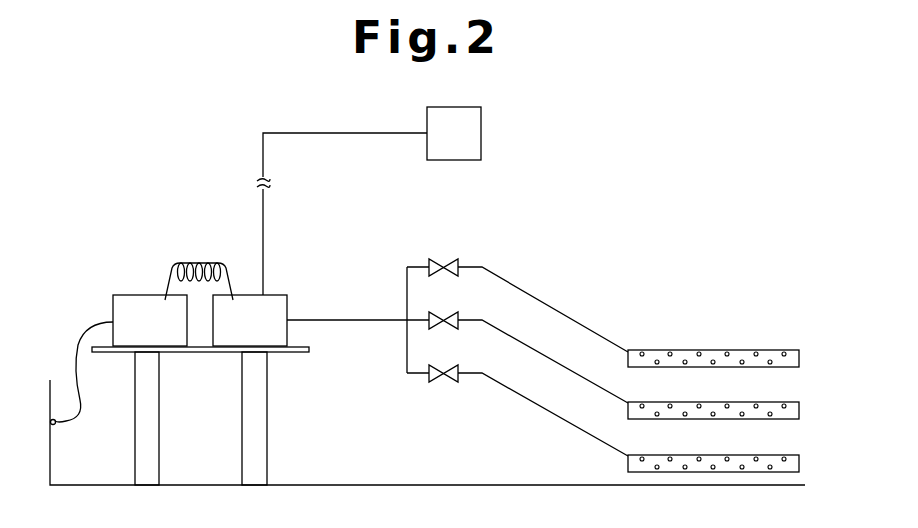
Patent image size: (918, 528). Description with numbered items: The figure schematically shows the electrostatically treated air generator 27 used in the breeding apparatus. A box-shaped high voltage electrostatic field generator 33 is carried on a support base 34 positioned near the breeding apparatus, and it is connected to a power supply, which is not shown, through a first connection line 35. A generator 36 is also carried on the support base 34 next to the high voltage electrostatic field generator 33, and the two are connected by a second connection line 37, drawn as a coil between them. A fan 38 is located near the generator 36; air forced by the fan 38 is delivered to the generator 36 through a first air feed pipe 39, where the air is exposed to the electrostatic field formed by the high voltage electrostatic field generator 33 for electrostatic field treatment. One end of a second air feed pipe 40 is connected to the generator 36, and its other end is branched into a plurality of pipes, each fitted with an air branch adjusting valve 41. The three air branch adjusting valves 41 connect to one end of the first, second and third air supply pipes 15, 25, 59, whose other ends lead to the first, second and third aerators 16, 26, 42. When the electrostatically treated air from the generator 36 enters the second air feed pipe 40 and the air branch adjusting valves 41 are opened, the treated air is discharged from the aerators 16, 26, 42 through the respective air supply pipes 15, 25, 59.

The electrostatically treated air generator 27 is at (571, 121).
The high voltage electrostatic field generator 33 is at (127, 295).
The support base 34 is at (267, 397).
The first connection line 35 is at (95, 324).
The generator 36 is at (286, 295).
The second connection line 37 is at (197, 262).
The fan 38 is at (481, 137).
The first air feed pipe 39 is at (331, 133).
The second air feed pipe 40 is at (356, 322).
The air branch adjusting valve 41 is at (459, 270).
The first air supply pipe 15 is at (542, 302).
The second air supply pipe 25 is at (533, 348).
The third air supply pipe 59 is at (530, 403).
The first aerator 16 is at (682, 350).
The second aerator 26 is at (678, 402).
The third aerator 42 is at (692, 455).